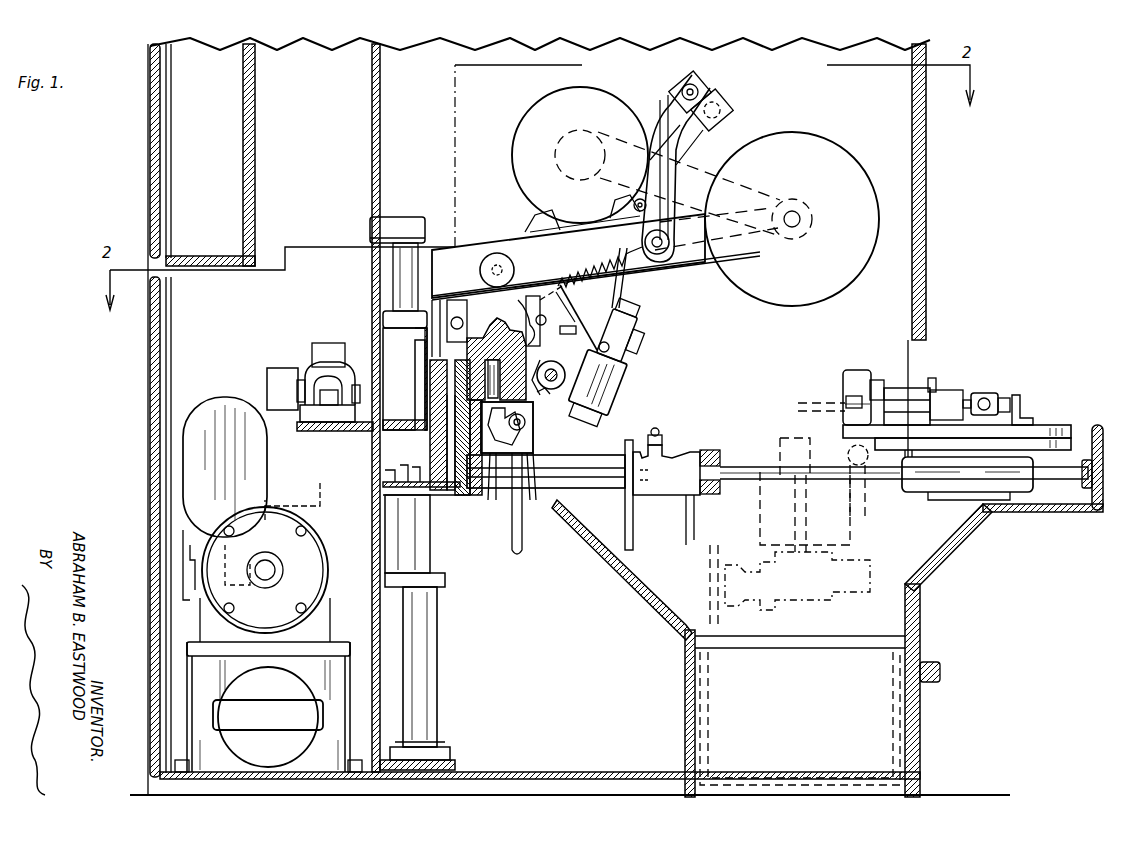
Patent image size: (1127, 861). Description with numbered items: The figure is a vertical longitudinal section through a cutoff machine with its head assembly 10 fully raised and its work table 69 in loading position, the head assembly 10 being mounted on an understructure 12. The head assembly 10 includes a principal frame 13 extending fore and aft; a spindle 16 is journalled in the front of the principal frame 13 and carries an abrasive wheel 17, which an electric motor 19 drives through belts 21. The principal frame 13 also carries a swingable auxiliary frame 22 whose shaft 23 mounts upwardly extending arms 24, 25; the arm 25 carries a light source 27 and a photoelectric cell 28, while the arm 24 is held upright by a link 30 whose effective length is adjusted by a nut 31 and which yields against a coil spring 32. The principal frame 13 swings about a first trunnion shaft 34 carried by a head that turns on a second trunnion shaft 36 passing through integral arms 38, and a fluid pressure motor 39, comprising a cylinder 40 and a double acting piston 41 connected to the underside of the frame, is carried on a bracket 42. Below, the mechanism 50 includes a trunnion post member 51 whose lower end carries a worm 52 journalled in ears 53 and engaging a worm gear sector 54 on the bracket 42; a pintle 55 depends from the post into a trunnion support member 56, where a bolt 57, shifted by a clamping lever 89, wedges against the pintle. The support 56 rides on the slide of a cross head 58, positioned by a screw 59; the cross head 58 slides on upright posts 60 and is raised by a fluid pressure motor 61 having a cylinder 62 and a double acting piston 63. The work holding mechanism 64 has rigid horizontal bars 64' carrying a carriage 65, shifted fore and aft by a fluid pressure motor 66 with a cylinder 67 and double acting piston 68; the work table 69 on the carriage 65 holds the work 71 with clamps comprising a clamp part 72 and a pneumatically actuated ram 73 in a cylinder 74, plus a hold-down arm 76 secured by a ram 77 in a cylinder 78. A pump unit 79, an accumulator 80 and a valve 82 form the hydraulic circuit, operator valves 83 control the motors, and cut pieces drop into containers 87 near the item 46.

The head assembly 10 is at (515, 245).
The understructure 12 is at (548, 772).
The principal frame 13 is at (690, 258).
The spindle 16 is at (800, 222).
The abrasive wheel 17 is at (816, 145).
The electric motor 19 is at (528, 130).
The belts 21 is at (690, 178).
The auxiliary frame 22 is at (660, 158).
The shaft 23 is at (670, 242).
The arm 24 is at (708, 150).
The arm 25 is at (660, 110).
The light source 27 is at (705, 88).
The photoelectric cell 28 is at (730, 102).
The link 30 is at (596, 258).
The nut 31 is at (580, 288).
The coil spring 32 is at (558, 385).
The first trunnion shaft 34 is at (482, 268).
The second trunnion shaft 36 is at (512, 320).
The integral arms 38 is at (455, 312).
The fluid pressure motor 39 is at (535, 292).
The cylinder 40 is at (622, 380).
The double acting piston 41 is at (620, 292).
The bracket 42 is at (580, 317).
The stop 46 is at (520, 280).
The mechanism 50 is at (433, 430).
The trunnion post member 51 is at (478, 348).
The worm 52 is at (543, 391).
The ears 53 is at (544, 384).
The worm gear sector 54 is at (562, 336).
The pintle 55 is at (494, 455).
The trunnion support member 56 is at (530, 455).
The bolt 57 is at (536, 424).
The cross head 58 is at (392, 360).
The screw 59 is at (440, 442).
The upright posts 60 is at (398, 278).
The fluid pressure motor 61 is at (437, 615).
The cylinder 62 is at (437, 693).
The double acting piston 63 is at (432, 538).
The work holding mechanism 64 is at (676, 480).
The rigid horizontal bars 64' is at (949, 465).
The carriage 65 is at (922, 490).
The fluid pressure motor 66 is at (556, 465).
The cylinder 67 is at (584, 485).
The double acting piston 68 is at (736, 480).
The work table 69 is at (1040, 426).
The work 71 is at (1000, 392).
The clamp part 72 is at (1018, 402).
The pneumatically actuated ram 73 is at (980, 390).
The cylinder 74 is at (935, 395).
The hold-down arm 76 is at (958, 390).
The pneumatically actuatable ram 77 is at (924, 382).
The cylinder 78 is at (876, 384).
The pump unit 79 is at (312, 540).
The accumulator 80 is at (206, 405).
The valve 82 is at (310, 365).
The valves 83 is at (832, 600).
The containers 87 is at (890, 665).
The clamping lever 89 is at (522, 540).